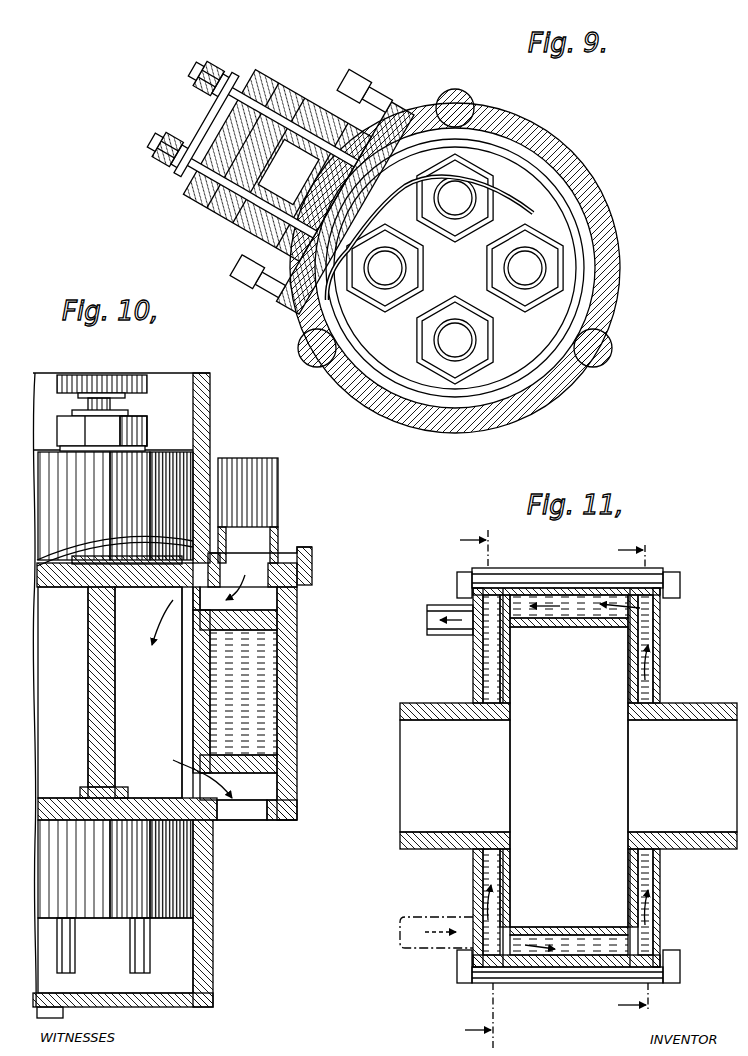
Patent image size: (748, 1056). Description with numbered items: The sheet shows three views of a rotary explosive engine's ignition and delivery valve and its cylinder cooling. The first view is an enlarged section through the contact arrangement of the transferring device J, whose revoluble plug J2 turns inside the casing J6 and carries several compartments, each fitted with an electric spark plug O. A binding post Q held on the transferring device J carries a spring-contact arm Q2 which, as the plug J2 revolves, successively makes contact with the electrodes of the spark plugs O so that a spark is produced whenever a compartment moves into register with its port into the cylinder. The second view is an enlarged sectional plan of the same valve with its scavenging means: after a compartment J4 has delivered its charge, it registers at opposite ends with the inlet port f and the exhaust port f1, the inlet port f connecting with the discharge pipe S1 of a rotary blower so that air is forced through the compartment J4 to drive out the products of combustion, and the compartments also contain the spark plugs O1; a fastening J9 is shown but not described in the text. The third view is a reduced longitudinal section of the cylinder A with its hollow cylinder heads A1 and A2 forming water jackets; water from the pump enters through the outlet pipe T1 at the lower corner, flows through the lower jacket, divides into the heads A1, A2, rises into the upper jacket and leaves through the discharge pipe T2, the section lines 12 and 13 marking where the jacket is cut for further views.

In FIG. 9, the transferring device J is at (455, 261).
In FIG. 10, the transferring device J is at (109, 695).
In FIG. 9, the casing J6 is at (582, 215).
In FIG. 9, the revoluble plug J2 is at (580, 286).
In FIG. 9, the electric spark plug O is at (455, 212).
In FIG. 9, the binding post Q is at (264, 158).
In FIG. 9, the spring-contact arm Q2 is at (430, 238).
In FIG. 10, the adjusting screw and nut J9 is at (107, 403).
In FIG. 10, the compartment J4 is at (135, 692).
In FIG. 10, the discharge pipe of the rotary blower S1 is at (282, 507).
In FIG. 10, the inlet port f is at (260, 584).
In FIG. 10, the exhaust port f1 is at (246, 818).
In FIG. 10, the electric spark plug O1 is at (132, 945).
In FIG. 11, the cylinder A is at (568, 775).
In FIG. 11, the cylinder head A1 is at (473, 660).
In FIG. 11, the cylinder head A2 is at (660, 672).
In FIG. 11, the discharge pipe T2 is at (435, 608).
In FIG. 11, the outlet pipe of the pump T1 is at (420, 948).
In FIG. 11, the section line 12- 12 is at (485, 785).
In FIG. 11, the section line 13- 13 is at (638, 781).